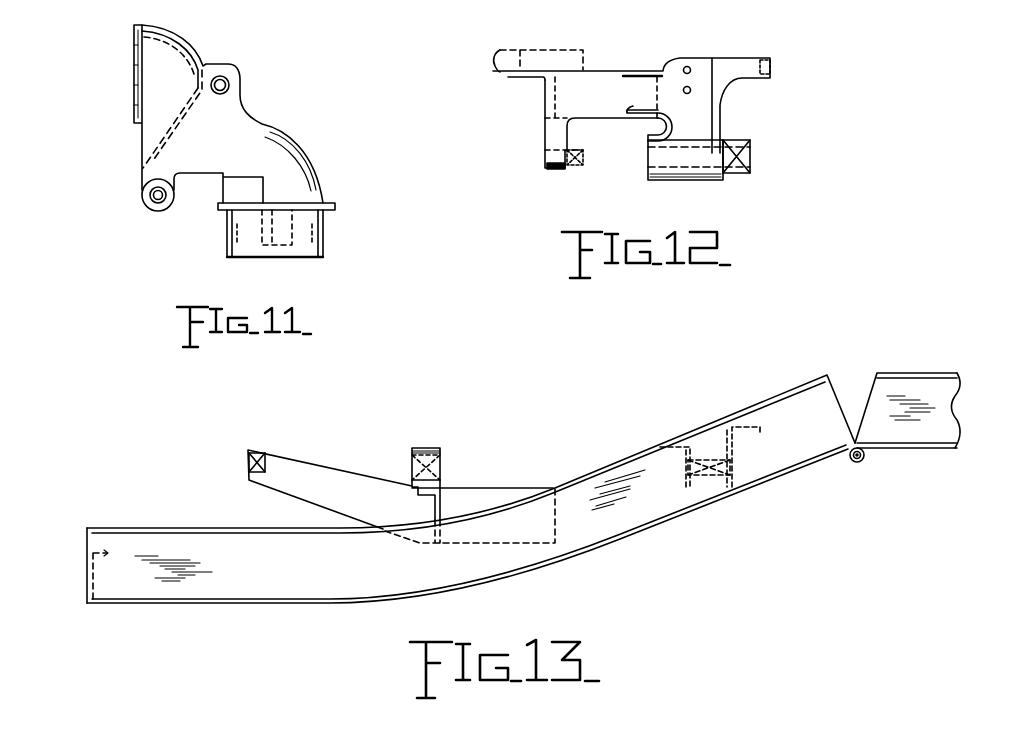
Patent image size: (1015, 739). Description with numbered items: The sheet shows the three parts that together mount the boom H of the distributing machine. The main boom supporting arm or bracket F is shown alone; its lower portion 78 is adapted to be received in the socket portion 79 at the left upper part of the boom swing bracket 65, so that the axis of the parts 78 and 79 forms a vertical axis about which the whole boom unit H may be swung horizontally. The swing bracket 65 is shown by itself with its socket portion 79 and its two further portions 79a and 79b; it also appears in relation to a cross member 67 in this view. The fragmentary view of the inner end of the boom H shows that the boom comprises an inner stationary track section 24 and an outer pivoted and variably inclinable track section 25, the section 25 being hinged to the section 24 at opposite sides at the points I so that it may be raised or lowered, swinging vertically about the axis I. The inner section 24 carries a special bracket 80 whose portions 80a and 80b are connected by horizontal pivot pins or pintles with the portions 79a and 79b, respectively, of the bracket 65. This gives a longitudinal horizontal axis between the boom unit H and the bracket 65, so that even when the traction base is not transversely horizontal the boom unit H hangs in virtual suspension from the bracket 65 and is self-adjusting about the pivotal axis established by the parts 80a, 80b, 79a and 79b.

In FIG. 11, the main boom supporting arm or bracket F is at (280, 150).
In FIG. 11, the lower portion of bracket F 78 is at (306, 238).
In FIG. 12, the cross member 67 is at (551, 58).
In FIG. 12, the boom swing bracket 65 is at (595, 83).
In FIG. 12, the socket portion 79 is at (572, 103).
In FIG. 12, the portion of bracket 65 79a is at (557, 170).
In FIG. 12, the portion of bracket 65 79b is at (720, 180).
In FIG. 13, the inner stationary track section 24 is at (633, 462).
In FIG. 13, the boom H is at (730, 389).
In FIG. 13, the hinge points I is at (865, 457).
In FIG. 13, the outer pivoted and variably inclinable track section 25 is at (928, 387).
In FIG. 13, the special bracket 80 is at (340, 482).
In FIG. 13, the portion of bracket 80 80a is at (268, 447).
In FIG. 13, the portion of bracket 80 80b is at (436, 447).